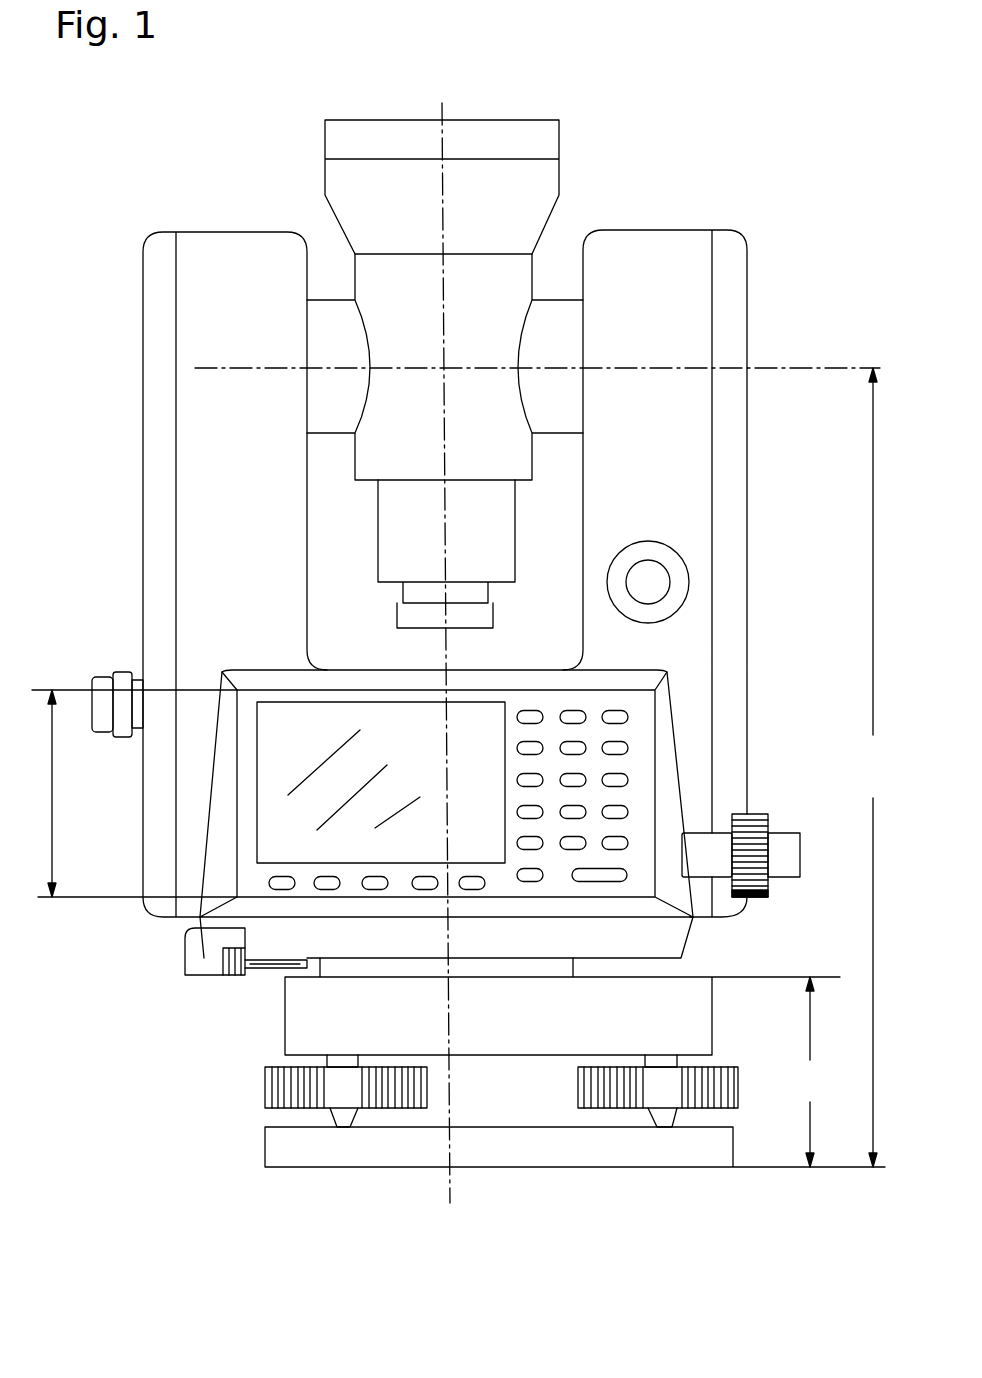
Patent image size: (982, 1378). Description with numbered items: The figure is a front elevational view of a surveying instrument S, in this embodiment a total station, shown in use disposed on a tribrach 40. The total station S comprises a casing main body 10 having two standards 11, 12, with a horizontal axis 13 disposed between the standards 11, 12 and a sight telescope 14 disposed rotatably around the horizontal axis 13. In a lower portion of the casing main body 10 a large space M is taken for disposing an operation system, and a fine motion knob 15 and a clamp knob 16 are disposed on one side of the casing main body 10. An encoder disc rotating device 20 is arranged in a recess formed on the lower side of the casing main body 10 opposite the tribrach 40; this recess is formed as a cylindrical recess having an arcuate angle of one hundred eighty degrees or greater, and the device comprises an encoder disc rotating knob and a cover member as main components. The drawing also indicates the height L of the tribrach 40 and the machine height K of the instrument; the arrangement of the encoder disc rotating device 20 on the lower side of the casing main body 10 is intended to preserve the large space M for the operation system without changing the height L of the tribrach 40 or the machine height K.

The surveying instrument S is at (160, 107).
The casing main body 10 is at (413, 541).
The standard 11 is at (665, 237).
The standard 12 is at (200, 232).
The horizontal axis 13 is at (333, 313).
The sight telescope 14 is at (537, 185).
The fine motion knob 15 is at (758, 897).
The clamp knob 16 is at (795, 833).
The encoder disc rotating device 20 is at (203, 990).
The tribrach 40 is at (240, 1152).
The space for disposing an operation system M is at (134, 793).
The machine height K is at (871, 767).
The height of the tribrach L is at (809, 1072).